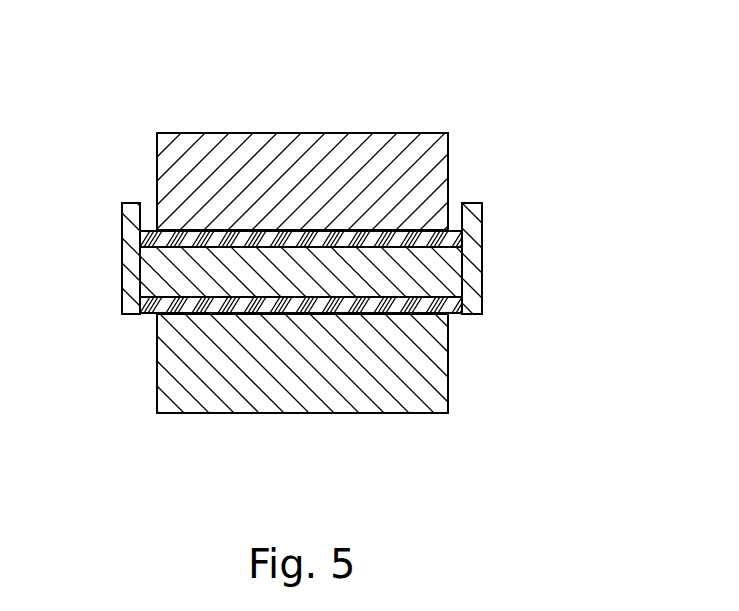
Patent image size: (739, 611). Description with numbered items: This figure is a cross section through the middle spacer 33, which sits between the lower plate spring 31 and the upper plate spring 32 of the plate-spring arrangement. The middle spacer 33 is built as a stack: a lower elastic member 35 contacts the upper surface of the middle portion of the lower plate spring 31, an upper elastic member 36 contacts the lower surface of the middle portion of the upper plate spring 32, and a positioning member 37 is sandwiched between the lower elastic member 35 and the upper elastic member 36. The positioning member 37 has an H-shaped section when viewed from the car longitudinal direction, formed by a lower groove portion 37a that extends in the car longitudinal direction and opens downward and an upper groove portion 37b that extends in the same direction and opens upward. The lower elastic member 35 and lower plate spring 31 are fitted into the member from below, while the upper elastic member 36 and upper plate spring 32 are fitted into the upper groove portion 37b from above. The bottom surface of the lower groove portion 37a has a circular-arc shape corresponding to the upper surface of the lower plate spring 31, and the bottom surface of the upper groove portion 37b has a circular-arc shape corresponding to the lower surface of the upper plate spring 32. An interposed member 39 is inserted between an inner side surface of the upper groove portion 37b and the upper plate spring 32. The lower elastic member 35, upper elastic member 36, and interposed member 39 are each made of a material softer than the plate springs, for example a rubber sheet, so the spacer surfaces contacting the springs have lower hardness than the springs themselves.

The lower plate spring 31 is at (195, 413).
The upper plate spring 32 is at (195, 133).
The middle spacer 33 is at (409, 270).
The lower elastic member 35 is at (374, 324).
The upper elastic member 36 is at (462, 242).
The positioning member 37 is at (482, 264).
The lower groove portion 37a is at (322, 313).
The upper groove portion 37b is at (297, 245).
The interposed member 39 is at (155, 230).